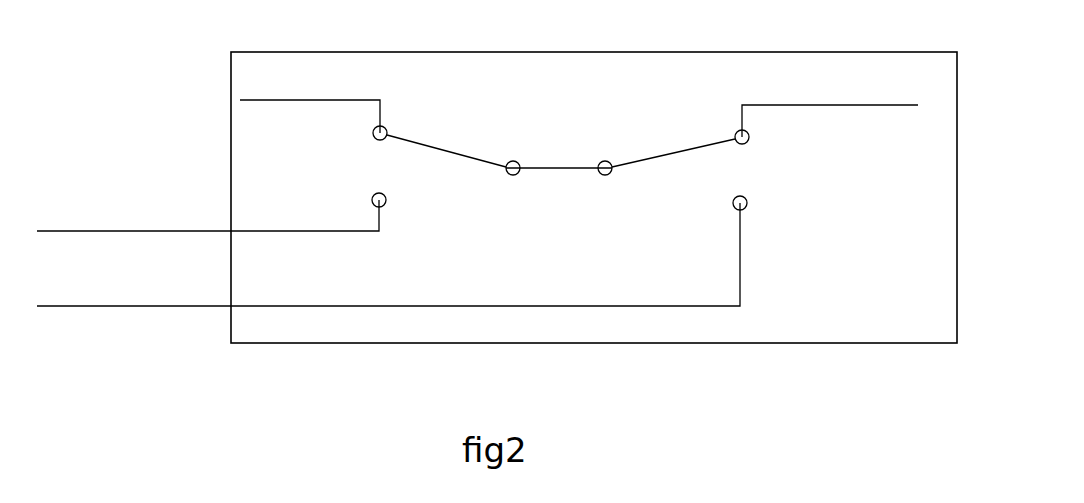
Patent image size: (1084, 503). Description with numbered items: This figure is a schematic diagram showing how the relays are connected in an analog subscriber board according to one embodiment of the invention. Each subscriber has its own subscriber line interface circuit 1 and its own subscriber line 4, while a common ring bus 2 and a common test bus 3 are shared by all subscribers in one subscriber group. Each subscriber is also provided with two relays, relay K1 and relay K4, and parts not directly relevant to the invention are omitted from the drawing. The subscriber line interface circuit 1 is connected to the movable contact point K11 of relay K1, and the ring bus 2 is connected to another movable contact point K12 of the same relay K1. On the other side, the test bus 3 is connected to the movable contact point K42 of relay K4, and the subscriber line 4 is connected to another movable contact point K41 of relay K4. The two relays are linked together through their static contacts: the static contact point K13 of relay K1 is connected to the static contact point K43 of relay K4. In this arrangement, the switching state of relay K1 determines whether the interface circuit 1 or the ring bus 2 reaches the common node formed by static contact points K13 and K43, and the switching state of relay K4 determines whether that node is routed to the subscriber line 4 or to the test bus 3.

The subscriber line interface circuit 1 is at (579, 196).
The ring bus 2 is at (208, 215).
The test bus 3 is at (388, 254).
The subscriber line 4 is at (827, 103).
The relay K1 is at (446, 185).
The relay K4 is at (673, 187).
The movable contact point K11 is at (395, 127).
The movable contact point K12 is at (394, 194).
The static contact point K13 is at (533, 163).
The movable contact point K41 is at (727, 131).
The movable contact point K42 is at (725, 197).
The static contact point K43 is at (586, 163).